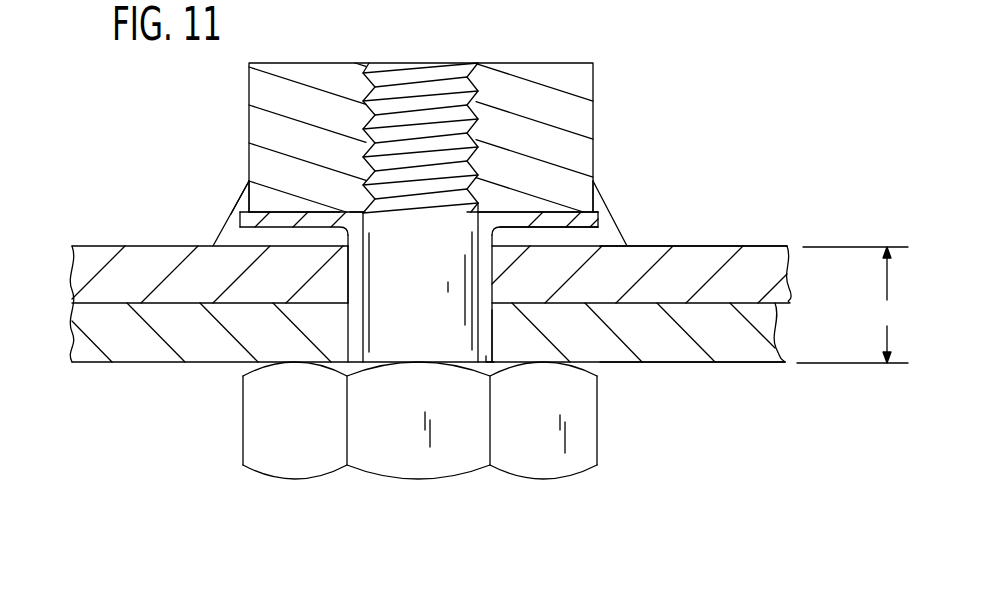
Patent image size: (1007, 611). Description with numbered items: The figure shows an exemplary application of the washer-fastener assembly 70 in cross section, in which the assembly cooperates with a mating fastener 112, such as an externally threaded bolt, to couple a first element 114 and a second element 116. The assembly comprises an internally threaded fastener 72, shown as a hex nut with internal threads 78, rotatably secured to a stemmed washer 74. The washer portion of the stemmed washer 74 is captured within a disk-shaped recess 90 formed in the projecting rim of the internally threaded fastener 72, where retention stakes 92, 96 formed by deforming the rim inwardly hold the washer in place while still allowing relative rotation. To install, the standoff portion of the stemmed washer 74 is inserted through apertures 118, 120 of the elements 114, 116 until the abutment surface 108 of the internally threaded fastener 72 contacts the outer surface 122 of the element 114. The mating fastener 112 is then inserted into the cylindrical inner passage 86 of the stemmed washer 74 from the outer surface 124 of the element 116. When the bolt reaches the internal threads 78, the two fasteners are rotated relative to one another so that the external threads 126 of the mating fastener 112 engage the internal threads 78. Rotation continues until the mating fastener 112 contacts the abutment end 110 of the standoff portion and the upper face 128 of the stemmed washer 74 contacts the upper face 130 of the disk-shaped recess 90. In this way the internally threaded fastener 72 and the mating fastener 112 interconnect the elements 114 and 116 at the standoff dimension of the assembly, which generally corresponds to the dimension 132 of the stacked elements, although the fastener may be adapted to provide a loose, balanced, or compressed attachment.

The washer-fastener assembly 70 is at (690, 67).
The internally threaded fastener 72 is at (597, 130).
The stemmed washer 74 is at (563, 228).
The internal threads 78 is at (375, 79).
The external threads 126 is at (428, 90).
The disk-shaped recess 90 is at (536, 235).
The upper face of the stemmed washer 128 is at (272, 212).
The retention stake 96 is at (585, 240).
The retention stake 92 is at (253, 237).
The upper face of the disk-shaped recess 130 is at (247, 224).
The cylindrical inner passage 86 is at (363, 325).
The aperture 118 is at (493, 270).
The abutment end 110 is at (488, 363).
The aperture 120 is at (500, 327).
The element 114 is at (790, 271).
The element 116 is at (776, 326).
The abutment surface 108 is at (150, 247).
The outer surface of element 114 122 is at (732, 246).
The outer surface of element 116 124 is at (710, 364).
The dimension of the elements 132 is at (852, 305).
The mating fastener 112 is at (628, 446).